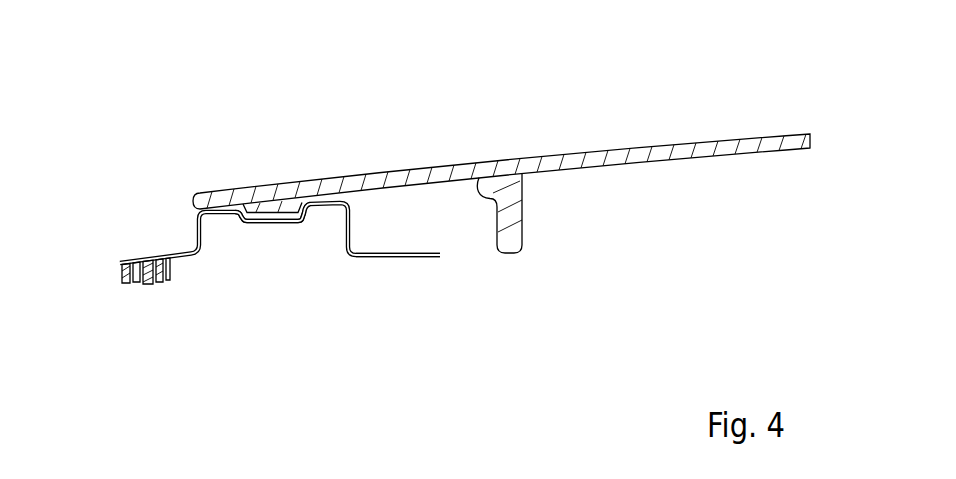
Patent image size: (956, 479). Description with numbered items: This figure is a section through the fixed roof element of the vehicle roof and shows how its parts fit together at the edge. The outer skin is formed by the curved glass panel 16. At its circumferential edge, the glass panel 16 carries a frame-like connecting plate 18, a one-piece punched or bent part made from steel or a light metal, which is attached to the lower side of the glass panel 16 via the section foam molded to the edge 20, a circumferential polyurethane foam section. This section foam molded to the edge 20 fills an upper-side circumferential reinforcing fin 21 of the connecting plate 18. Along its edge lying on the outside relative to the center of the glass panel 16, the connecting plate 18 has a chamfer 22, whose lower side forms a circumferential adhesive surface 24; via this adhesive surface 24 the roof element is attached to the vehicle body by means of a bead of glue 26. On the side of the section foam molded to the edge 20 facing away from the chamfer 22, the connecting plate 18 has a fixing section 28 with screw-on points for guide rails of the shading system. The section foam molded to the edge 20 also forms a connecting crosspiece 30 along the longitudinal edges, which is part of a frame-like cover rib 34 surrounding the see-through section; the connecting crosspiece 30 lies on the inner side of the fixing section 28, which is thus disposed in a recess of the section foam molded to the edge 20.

The glass panel 16 is at (649, 153).
The connecting plate 18 is at (347, 250).
The section foam molded to the edge 20 is at (263, 212).
The reinforcing fin 21 is at (278, 218).
The chamfer 22 is at (149, 313).
The adhesive surface 24 is at (152, 285).
The bead of glue 26 is at (128, 285).
The fixing section 28 is at (428, 258).
The connecting crosspiece 30 is at (543, 249).
The cover rib 34 is at (515, 245).